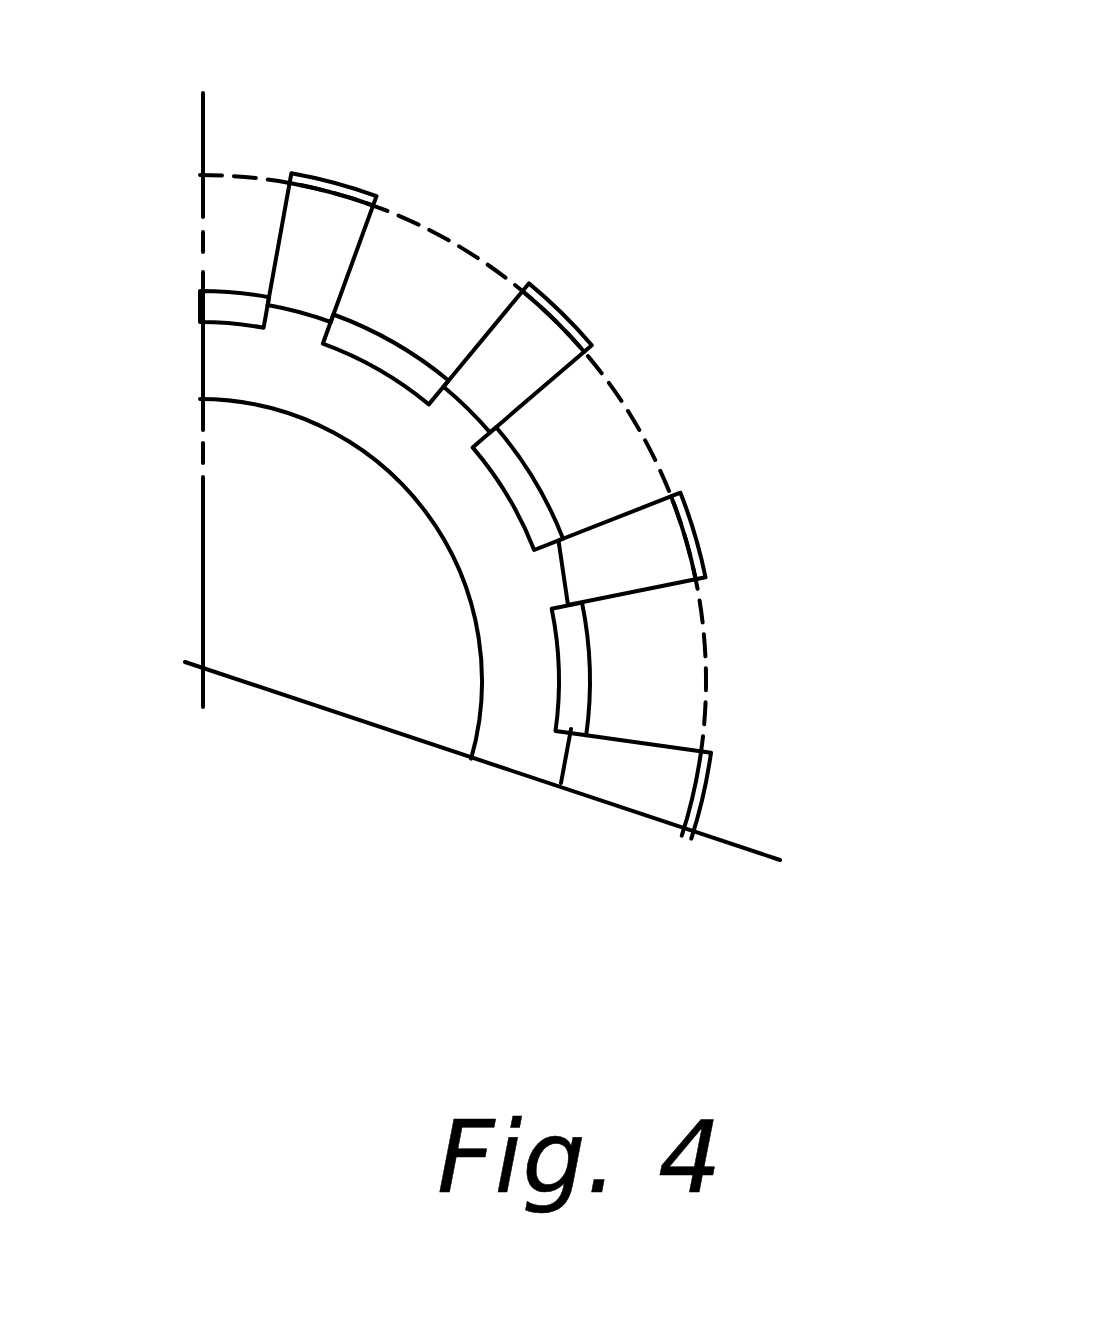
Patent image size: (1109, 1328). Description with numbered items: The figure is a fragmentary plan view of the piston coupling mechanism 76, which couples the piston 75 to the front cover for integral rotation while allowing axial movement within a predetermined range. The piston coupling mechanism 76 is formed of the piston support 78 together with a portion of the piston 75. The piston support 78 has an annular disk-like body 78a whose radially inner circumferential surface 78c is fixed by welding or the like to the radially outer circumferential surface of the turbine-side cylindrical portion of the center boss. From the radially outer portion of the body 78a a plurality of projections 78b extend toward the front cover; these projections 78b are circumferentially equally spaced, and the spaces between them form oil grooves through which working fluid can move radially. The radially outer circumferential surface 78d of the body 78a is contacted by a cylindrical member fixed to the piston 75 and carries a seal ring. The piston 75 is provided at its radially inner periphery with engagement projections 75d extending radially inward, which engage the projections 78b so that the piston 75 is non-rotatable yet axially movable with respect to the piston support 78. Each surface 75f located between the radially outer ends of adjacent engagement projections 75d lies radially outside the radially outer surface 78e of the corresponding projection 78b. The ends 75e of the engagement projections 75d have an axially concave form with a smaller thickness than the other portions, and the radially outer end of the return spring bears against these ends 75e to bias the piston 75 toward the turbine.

The piston 75 is at (657, 233).
The piston coupling mechanism 76 is at (250, 230).
The piston support 78 is at (667, 842).
The annular disk-like body 78a is at (495, 715).
The projection 78b is at (310, 233).
The radially inner circumferential surface 78c is at (480, 677).
The radially outer circumferential surface 78d is at (710, 716).
The radially outer surface of the projection 78e is at (591, 334).
The engagement projection 75d is at (408, 297).
The end of the engagement projection 75e is at (567, 647).
The surface between engagement projections 75f is at (524, 307).